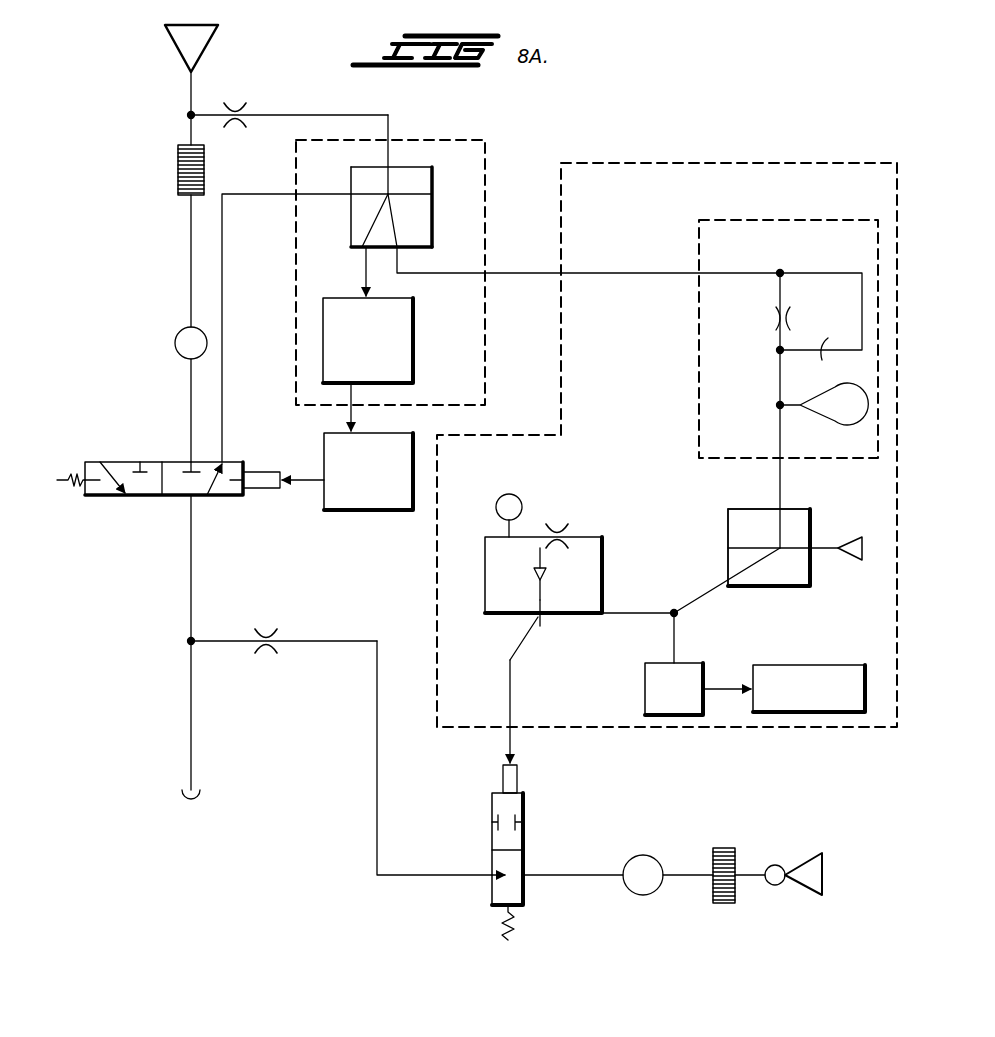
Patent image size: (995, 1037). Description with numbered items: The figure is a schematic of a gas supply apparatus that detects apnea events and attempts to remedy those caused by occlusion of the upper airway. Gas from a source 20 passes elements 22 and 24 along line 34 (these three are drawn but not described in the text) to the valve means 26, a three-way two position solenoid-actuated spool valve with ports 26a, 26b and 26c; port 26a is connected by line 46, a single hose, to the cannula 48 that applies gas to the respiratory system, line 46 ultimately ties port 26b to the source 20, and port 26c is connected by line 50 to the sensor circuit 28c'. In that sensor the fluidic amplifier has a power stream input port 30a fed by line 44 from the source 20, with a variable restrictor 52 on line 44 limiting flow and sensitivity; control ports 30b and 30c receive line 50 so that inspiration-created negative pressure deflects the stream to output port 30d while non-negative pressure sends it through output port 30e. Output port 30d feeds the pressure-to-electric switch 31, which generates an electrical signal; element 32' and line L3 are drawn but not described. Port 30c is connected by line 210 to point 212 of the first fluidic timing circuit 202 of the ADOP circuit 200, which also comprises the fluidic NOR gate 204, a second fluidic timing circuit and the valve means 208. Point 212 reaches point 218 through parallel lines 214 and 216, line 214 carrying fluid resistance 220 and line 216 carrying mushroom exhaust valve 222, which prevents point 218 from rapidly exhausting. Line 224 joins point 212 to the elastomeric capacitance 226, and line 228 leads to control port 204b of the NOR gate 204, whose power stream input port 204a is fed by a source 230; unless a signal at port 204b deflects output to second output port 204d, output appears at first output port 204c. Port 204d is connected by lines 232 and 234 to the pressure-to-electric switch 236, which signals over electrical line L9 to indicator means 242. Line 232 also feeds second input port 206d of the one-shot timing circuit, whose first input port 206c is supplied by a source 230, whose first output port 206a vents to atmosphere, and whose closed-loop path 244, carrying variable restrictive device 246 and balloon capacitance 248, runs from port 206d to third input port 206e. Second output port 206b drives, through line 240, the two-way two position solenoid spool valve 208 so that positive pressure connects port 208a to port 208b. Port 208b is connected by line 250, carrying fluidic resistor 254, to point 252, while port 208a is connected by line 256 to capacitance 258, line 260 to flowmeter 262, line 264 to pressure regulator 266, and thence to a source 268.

The source 20 is at (216, 41).
The filter 22 is at (204, 162).
The pressure gauge 24 is at (175, 344).
The valve means 26 is at (76, 445).
The port 26a is at (125, 497).
The port 26b is at (108, 462).
The port 26c is at (140, 462).
The sensor circuit 28c' is at (395, 246).
The power stream input port 30a is at (396, 167).
The control port 30b is at (351, 190).
The control port 30c is at (433, 196).
The output port 30d is at (362, 248).
The output port 30e is at (400, 250).
The pressure-to-electric switch 31 is at (413, 326).
The control circuit 32' is at (368, 468).
The supply line 34 is at (188, 132).
The line 44 is at (330, 113).
The line 46 is at (190, 708).
The means for applying gas 48 is at (200, 790).
The line 50 is at (223, 262).
The variable restrictor 52 is at (240, 106).
The control signal line L3 is at (288, 483).
The electrical line L9 is at (718, 686).
The ADOP circuit 200 is at (722, 163).
The first fluidic timing circuit 202 is at (752, 220).
The fluidic NOR gate 204 is at (810, 592).
The power stream input port 204a is at (814, 545).
The control port 204b is at (784, 511).
The first output port 204c is at (726, 548).
The second output port 204d is at (728, 590).
The first output port 206a is at (545, 620).
The second output port 206b is at (522, 625).
The first input port 206c is at (546, 582).
The second input port 206d is at (546, 610).
The third input port 206e is at (539, 592).
The valve means 208 is at (540, 778).
The port 208a is at (523, 822).
The port 208b is at (492, 822).
The line 210 is at (642, 272).
The point 212 is at (780, 269).
The line 214 is at (778, 299).
The line 216 is at (861, 300).
The point 218 is at (778, 351).
The fluid resistance 220 is at (777, 320).
The mushroom valve 222 is at (822, 355).
The line 224 is at (778, 384).
The variable volume elastomeric capacitance 226 is at (818, 420).
The line 228 is at (778, 438).
The source 230 is at (846, 560).
The line 232 is at (645, 612).
The line 234 is at (676, 648).
The pressure-to-electric switch 236 is at (645, 690).
The line 240 is at (508, 697).
The indicator means 242 is at (790, 665).
The closed-loop fluidic path 244 is at (485, 578).
The fluid restrictive device 246 is at (565, 527).
The capacitance device 248 is at (514, 497).
The line 250 is at (377, 672).
The point 252 is at (196, 638).
The fluidic resistor 254 is at (270, 632).
The line 256 is at (575, 873).
The capacitance 258 is at (643, 896).
The line 260 is at (688, 877).
The flowmeter 262 is at (725, 904).
The line 264 is at (745, 873).
The pressure regulator 266 is at (775, 865).
The source 268 is at (822, 864).